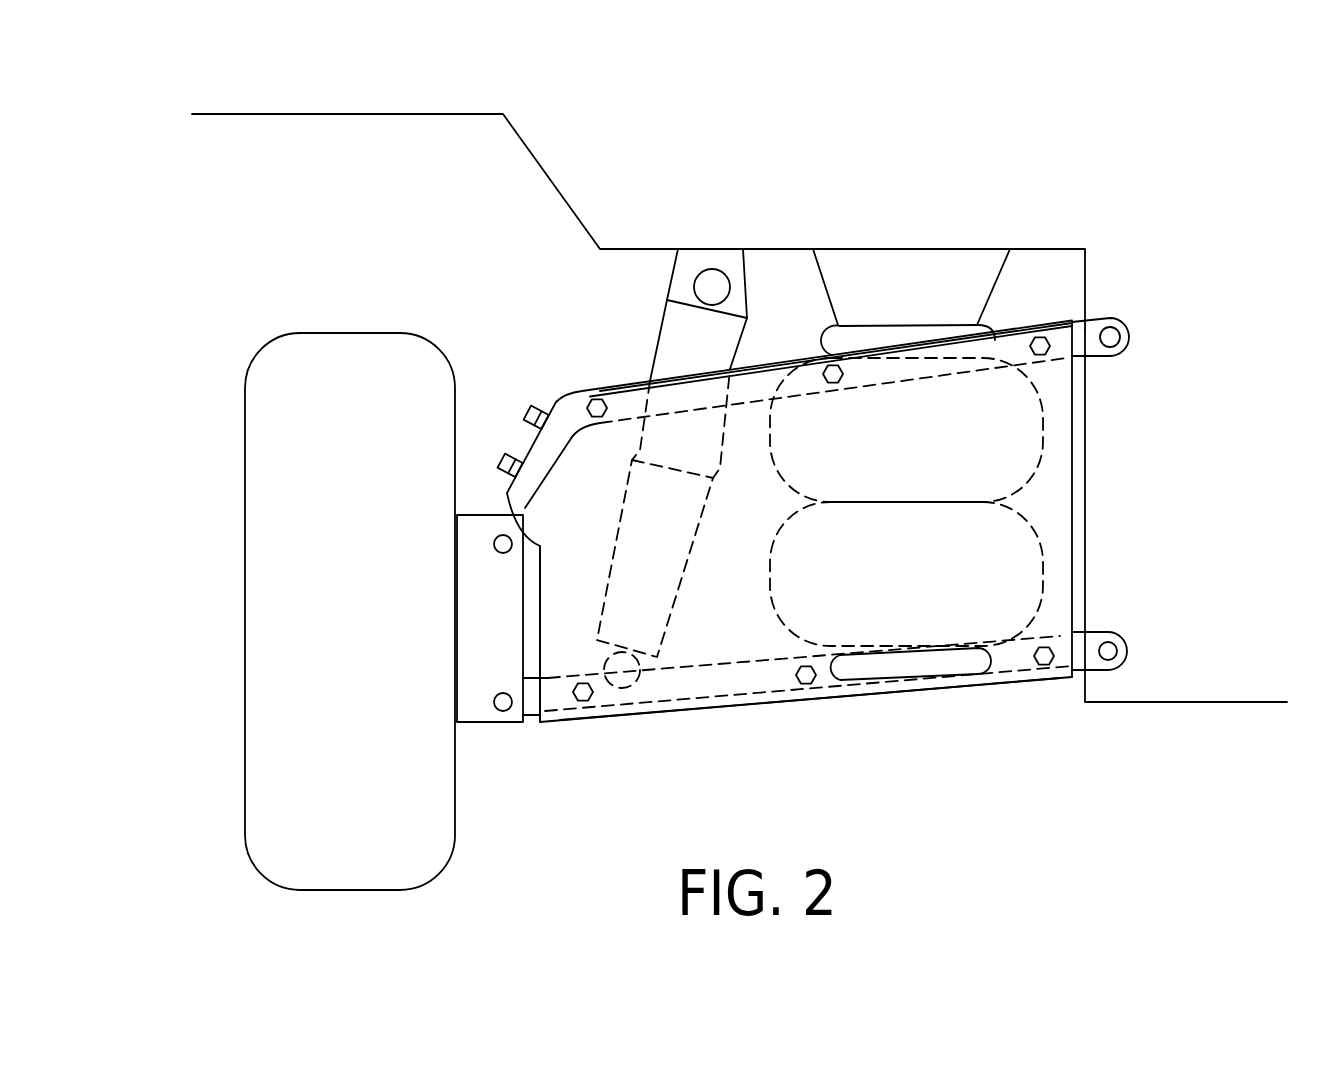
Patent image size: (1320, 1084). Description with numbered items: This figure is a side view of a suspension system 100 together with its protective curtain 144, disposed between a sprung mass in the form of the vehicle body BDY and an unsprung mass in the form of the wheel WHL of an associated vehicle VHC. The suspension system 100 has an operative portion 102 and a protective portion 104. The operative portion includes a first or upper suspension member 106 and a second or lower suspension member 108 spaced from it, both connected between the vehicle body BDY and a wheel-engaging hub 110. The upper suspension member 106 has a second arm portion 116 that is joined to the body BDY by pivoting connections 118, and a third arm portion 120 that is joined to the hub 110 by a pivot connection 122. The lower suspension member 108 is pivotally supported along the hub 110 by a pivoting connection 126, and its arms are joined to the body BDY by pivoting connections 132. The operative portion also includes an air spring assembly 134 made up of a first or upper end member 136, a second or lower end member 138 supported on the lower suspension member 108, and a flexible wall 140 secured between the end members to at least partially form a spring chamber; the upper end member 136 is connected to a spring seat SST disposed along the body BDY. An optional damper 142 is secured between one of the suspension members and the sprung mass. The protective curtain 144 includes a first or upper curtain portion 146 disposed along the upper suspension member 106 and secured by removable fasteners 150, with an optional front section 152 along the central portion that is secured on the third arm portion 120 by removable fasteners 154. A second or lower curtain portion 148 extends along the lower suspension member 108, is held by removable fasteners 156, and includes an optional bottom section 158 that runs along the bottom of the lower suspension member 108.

The suspension system 100 is at (452, 268).
The operative portion 102 is at (578, 340).
The protective portion 104 is at (575, 600).
The first or upper suspension member 106 is at (785, 352).
The second or lower suspension member 108 is at (738, 705).
The hub 110 is at (487, 647).
The second arm portion 116 is at (1017, 327).
The pivoting connections 118 is at (1108, 335).
The third arm portion 120 is at (518, 452).
The pivot connection 122 is at (493, 545).
The pivoting connection 126 is at (503, 705).
The pivoting connections 132 is at (1108, 648).
The air spring assembly 134 is at (1012, 502).
The first or upper end member 136 is at (892, 333).
The second or lower end member 138 is at (940, 667).
The flexible wall 140 is at (1043, 577).
The damper 142 is at (660, 285).
The protective curtain 144 is at (717, 553).
The first or upper curtain portion 146 is at (723, 495).
The second or lower curtain portion 148 is at (703, 652).
The removable fasteners 150 is at (600, 405).
The front section 152 is at (565, 420).
The removable fasteners 154 is at (497, 470).
The removable fasteners 156 is at (585, 700).
The bottom section 158 is at (845, 700).
The vehicle body BDY is at (520, 135).
The spring seat SST is at (967, 273).
The vehicle VHC is at (1195, 720).
The wheel WHL is at (273, 728).